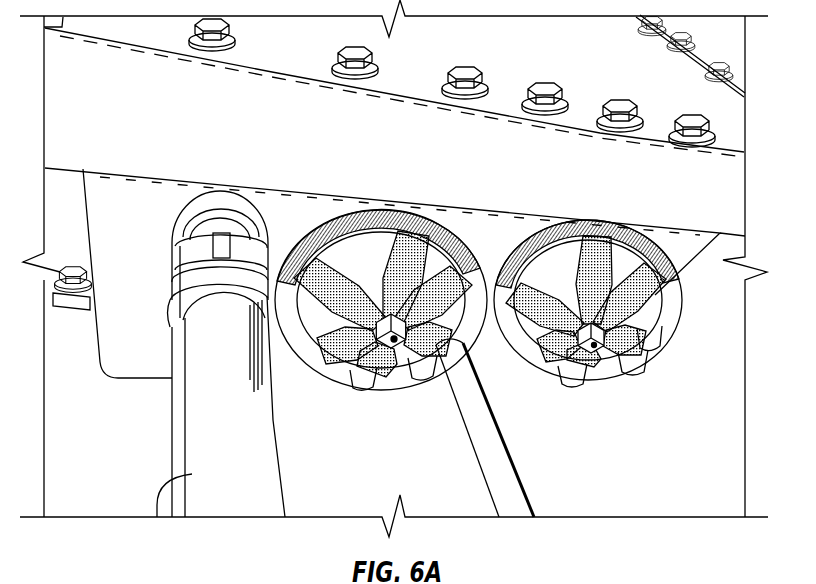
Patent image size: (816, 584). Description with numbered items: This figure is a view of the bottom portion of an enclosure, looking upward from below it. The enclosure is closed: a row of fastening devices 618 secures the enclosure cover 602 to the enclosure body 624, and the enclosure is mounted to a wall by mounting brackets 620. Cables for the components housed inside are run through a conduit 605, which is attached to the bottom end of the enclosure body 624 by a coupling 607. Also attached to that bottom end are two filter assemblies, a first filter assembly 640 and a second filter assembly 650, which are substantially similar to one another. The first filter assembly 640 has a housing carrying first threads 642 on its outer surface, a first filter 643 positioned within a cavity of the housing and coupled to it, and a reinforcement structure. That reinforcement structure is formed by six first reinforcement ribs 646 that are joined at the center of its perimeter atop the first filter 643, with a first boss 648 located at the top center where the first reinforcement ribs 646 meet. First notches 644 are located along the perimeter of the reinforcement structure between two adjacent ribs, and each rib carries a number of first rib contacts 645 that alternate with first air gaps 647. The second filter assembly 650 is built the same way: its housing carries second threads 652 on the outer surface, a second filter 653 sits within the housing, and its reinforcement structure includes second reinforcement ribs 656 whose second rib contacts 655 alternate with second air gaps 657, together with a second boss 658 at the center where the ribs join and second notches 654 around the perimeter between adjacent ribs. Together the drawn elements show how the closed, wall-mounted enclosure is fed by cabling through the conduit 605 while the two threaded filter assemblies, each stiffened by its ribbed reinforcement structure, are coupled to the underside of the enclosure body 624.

The enclosure cover 602 is at (627, 68).
The fastening devices 618 is at (544, 80).
The enclosure body 624 is at (112, 380).
The mounting brackets 620 is at (82, 312).
The coupling 607 is at (172, 265).
The conduit 605 is at (190, 432).
The filter assembly 1 640 is at (383, 316).
The threads 1 642 is at (465, 226).
The air gaps 1 647 is at (320, 235).
The rib contacts 1 645 is at (292, 248).
The filter 1 643 is at (393, 250).
The notches 1 644 is at (413, 245).
The reinforcement ribs 1 646 is at (374, 392).
The boss 1 648 is at (431, 390).
The filter assembly 2 650 is at (604, 308).
The threads 2 652 is at (630, 204).
The rib contacts 2 655 is at (507, 285).
The filter 2 653 is at (590, 238).
The air gaps 2 657 is at (533, 248).
The notches 2 654 is at (651, 340).
The reinforcement ribs 2 656 is at (578, 388).
The boss 2 658 is at (628, 390).